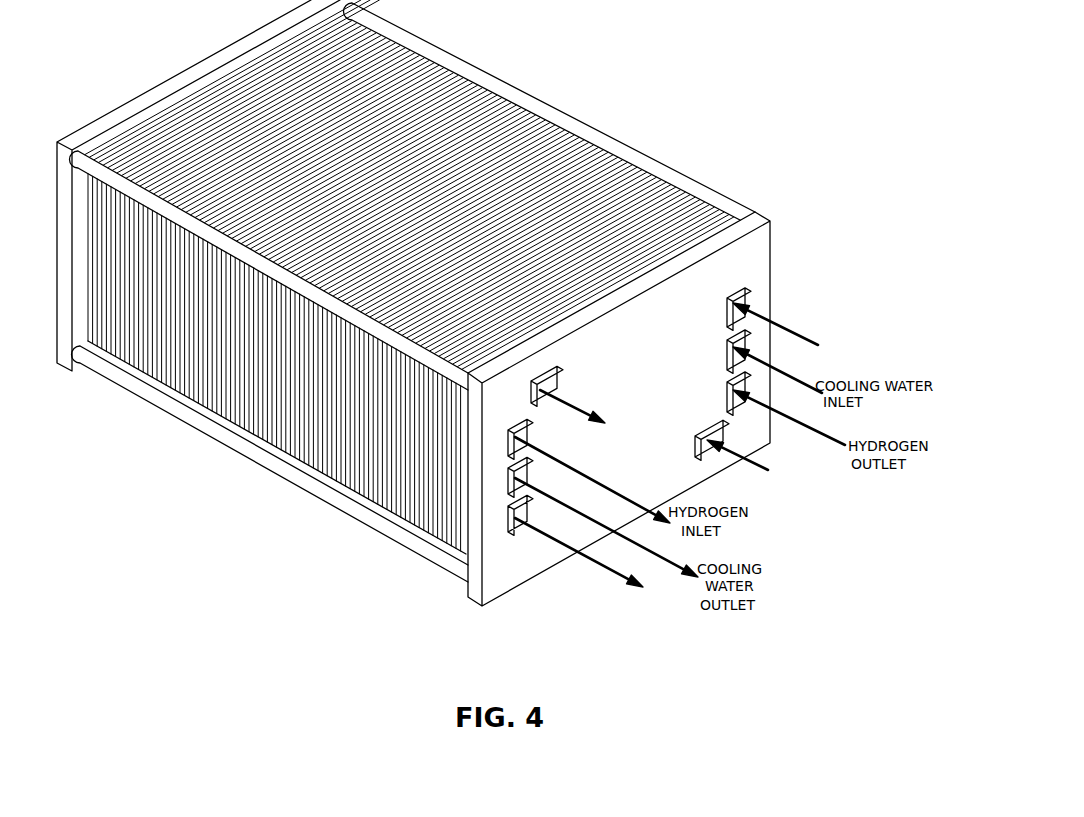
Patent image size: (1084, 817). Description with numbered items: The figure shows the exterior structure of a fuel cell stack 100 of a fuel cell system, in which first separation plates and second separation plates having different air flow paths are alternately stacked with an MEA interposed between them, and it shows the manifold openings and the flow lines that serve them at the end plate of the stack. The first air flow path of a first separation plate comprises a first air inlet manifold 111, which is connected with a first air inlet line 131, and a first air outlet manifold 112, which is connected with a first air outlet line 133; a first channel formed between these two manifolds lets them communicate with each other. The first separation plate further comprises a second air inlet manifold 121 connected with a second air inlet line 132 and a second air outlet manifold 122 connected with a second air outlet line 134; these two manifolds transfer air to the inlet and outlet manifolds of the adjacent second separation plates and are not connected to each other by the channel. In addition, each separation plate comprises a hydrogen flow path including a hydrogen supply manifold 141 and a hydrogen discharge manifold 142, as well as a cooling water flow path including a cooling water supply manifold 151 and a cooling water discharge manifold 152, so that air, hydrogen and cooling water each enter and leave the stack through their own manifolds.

The fuel cell stack 100 is at (610, 100).
The first air inlet manifold 111 is at (740, 298).
The first air outlet manifold 112 is at (514, 530).
The second air inlet manifold 121 is at (694, 457).
The second air outlet manifold 122 is at (557, 378).
The first air inlet line 131 is at (818, 345).
The second air inlet line 132 is at (768, 474).
The first air outlet line 133 is at (590, 563).
The second air outlet line 134 is at (577, 404).
The hydrogen supply manifold 141 is at (509, 448).
The hydrogen discharge manifold 142 is at (725, 383).
The cooling water supply manifold 151 is at (725, 350).
The cooling water discharge manifold 152 is at (509, 489).